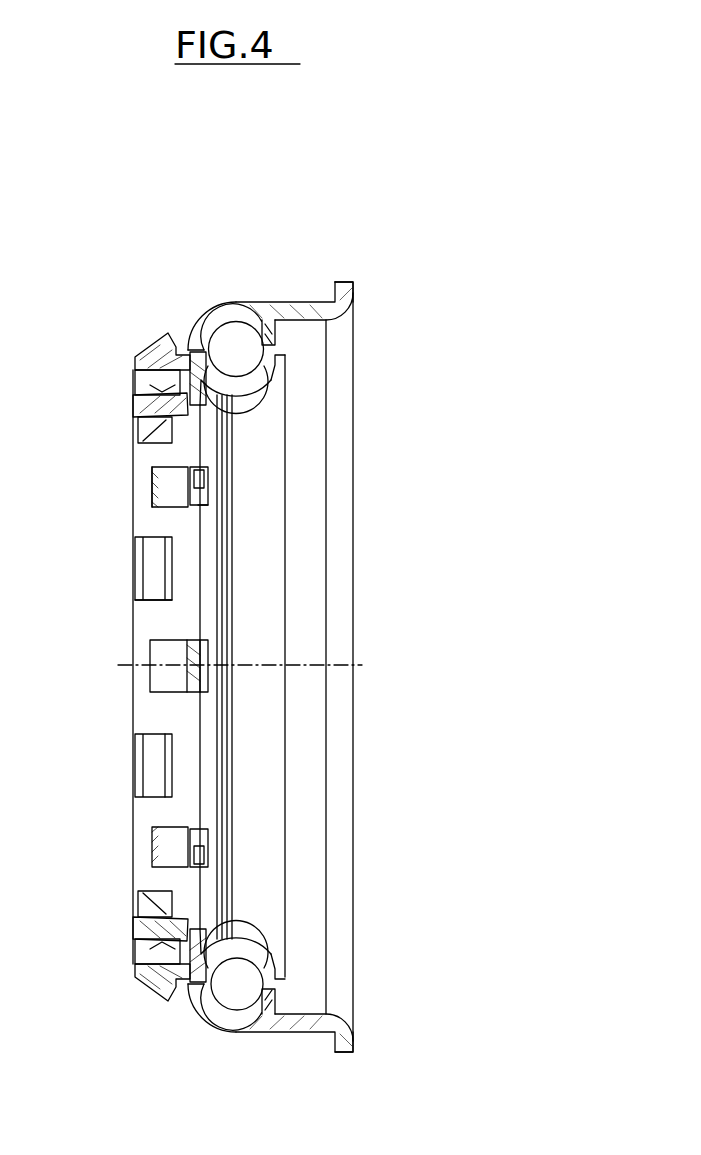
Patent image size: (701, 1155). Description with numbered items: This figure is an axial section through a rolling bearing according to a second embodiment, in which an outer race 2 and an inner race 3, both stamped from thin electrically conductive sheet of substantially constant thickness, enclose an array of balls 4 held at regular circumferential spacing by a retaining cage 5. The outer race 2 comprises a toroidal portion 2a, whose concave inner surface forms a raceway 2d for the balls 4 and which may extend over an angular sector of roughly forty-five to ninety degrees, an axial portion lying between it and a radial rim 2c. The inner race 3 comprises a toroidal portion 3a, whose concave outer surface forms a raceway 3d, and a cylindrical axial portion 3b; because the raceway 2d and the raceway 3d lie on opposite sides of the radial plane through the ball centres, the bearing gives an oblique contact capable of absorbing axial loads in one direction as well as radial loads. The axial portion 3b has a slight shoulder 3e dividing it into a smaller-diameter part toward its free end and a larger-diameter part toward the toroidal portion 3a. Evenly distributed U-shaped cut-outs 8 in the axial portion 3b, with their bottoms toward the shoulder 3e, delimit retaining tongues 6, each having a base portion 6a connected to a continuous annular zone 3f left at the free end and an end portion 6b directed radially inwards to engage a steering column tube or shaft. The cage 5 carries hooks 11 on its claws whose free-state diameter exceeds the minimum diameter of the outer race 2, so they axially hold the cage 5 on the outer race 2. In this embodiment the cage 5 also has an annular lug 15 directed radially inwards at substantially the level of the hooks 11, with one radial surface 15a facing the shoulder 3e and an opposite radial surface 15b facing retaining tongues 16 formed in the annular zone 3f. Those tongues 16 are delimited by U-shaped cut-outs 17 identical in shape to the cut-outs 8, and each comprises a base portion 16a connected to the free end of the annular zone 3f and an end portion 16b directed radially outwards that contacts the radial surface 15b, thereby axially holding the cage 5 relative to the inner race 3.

The outer race 2 is at (288, 300).
The toroidal portion 2a is at (200, 316).
The radial rim 2c is at (355, 284).
The raceway 2d is at (231, 331).
The inner race 3 is at (280, 403).
The toroidal portion 3a is at (272, 1012).
The axial portion 3b is at (180, 925).
The raceway 3d is at (238, 966).
The shoulder 3e is at (224, 1014).
The continuous annular zone 3f is at (142, 654).
The balls 4 is at (240, 349).
The retaining cage 5 is at (137, 376).
The retaining tongues 6 is at (167, 470).
The base portion 6a is at (183, 479).
The end portion 6b is at (199, 498).
The cut-outs 8 is at (200, 508).
The hook 11 is at (160, 343).
The annular lug 15 is at (137, 403).
The radial surface 15a is at (190, 990).
The radial surface 15b is at (137, 966).
The retaining tongues 16 is at (152, 578).
The base portion 16a is at (143, 747).
The end portion 16b is at (160, 778).
The U-shaped cut-outs 17 is at (160, 597).